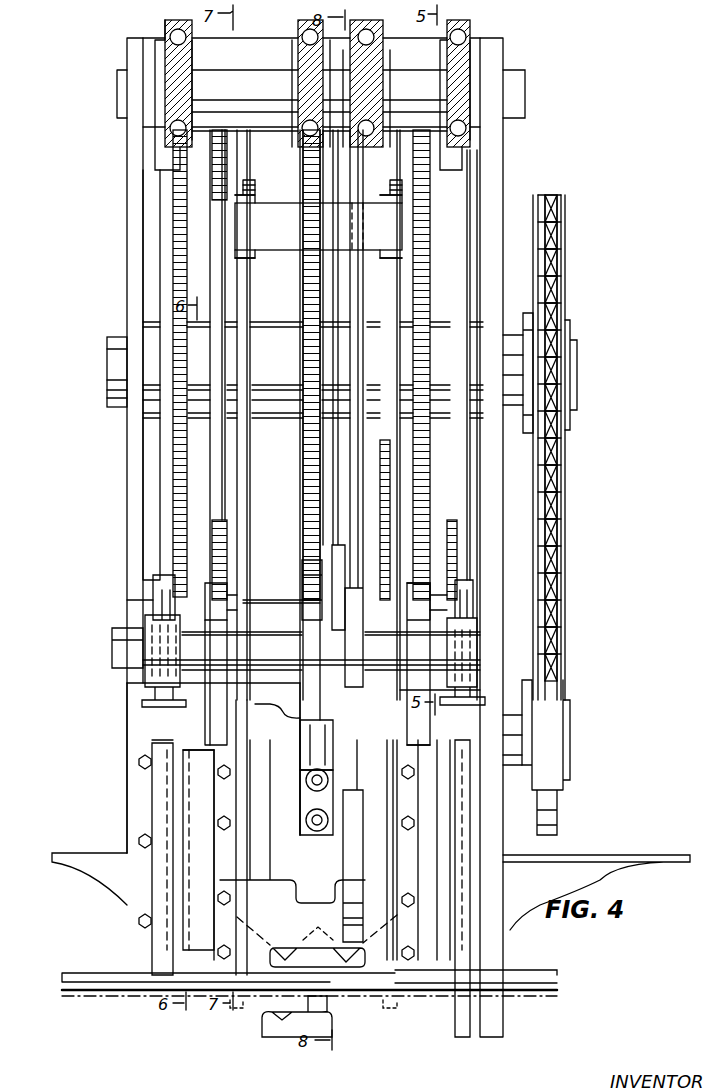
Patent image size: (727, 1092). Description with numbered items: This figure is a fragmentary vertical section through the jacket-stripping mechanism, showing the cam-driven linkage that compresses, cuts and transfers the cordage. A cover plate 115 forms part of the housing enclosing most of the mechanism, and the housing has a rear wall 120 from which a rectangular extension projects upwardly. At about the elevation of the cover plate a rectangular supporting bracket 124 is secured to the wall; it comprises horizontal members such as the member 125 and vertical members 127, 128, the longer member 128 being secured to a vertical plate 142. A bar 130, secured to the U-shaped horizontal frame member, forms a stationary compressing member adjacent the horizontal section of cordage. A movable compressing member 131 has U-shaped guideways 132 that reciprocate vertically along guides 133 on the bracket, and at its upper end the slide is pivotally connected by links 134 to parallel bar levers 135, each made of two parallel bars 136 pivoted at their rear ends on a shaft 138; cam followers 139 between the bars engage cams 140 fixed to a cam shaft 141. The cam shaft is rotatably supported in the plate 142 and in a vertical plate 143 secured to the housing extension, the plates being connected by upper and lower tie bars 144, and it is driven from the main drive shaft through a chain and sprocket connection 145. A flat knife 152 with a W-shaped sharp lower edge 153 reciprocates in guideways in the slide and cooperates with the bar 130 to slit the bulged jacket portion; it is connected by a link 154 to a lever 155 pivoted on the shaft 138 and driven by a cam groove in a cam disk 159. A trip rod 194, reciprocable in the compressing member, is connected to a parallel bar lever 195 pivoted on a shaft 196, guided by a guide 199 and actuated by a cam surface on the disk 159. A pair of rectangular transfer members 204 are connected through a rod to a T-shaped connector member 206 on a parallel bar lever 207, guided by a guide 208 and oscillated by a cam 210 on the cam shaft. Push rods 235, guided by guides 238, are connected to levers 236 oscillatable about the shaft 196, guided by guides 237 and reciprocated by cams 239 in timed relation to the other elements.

The cover plate 115 is at (590, 855).
The rear wall 120 is at (124, 747).
The supporting bracket 124 is at (150, 787).
The horizontal member 125 is at (86, 964).
The vertical member 127 is at (152, 817).
The vertical member 128 is at (460, 783).
The bar 130 is at (420, 993).
The movable compressing member 131 is at (266, 704).
The U-shaped guideways 132 is at (185, 863).
The guides 133 is at (178, 745).
The links 134 is at (210, 706).
The parallel bar levers 135 is at (205, 614).
The parallel bars 136 is at (208, 582).
The shaft 138 is at (112, 647).
The cam followers 139 is at (222, 609).
The cams 140 is at (218, 459).
The cam shaft 141 is at (114, 337).
The vertical plate 142 is at (500, 830).
The vertical plate 143 is at (127, 198).
The tie bars 144 is at (127, 125).
The chain and sprocket connection 145 is at (560, 558).
The knife 152 is at (303, 964).
The lower edge 153 is at (306, 942).
The link 154 is at (285, 741).
The lever 155 is at (336, 560).
The cam disk 159 is at (347, 477).
The trip rod 194 is at (344, 875).
The parallel bar lever 195 is at (390, 52).
The shaft 196 is at (267, 78).
The guide 199 is at (380, 16).
The cordage holding and transfer members 204 is at (238, 863).
The T-shaped connector member 206 is at (270, 202).
The parallel bar lever 207 is at (297, 39).
The guide 208 is at (300, 23).
The cam 210 is at (300, 303).
The push rods 235 is at (150, 459).
The levers 236 is at (168, 40).
The guides 237 is at (182, 22).
The guides 238 is at (150, 693).
The cams 239 is at (187, 229).